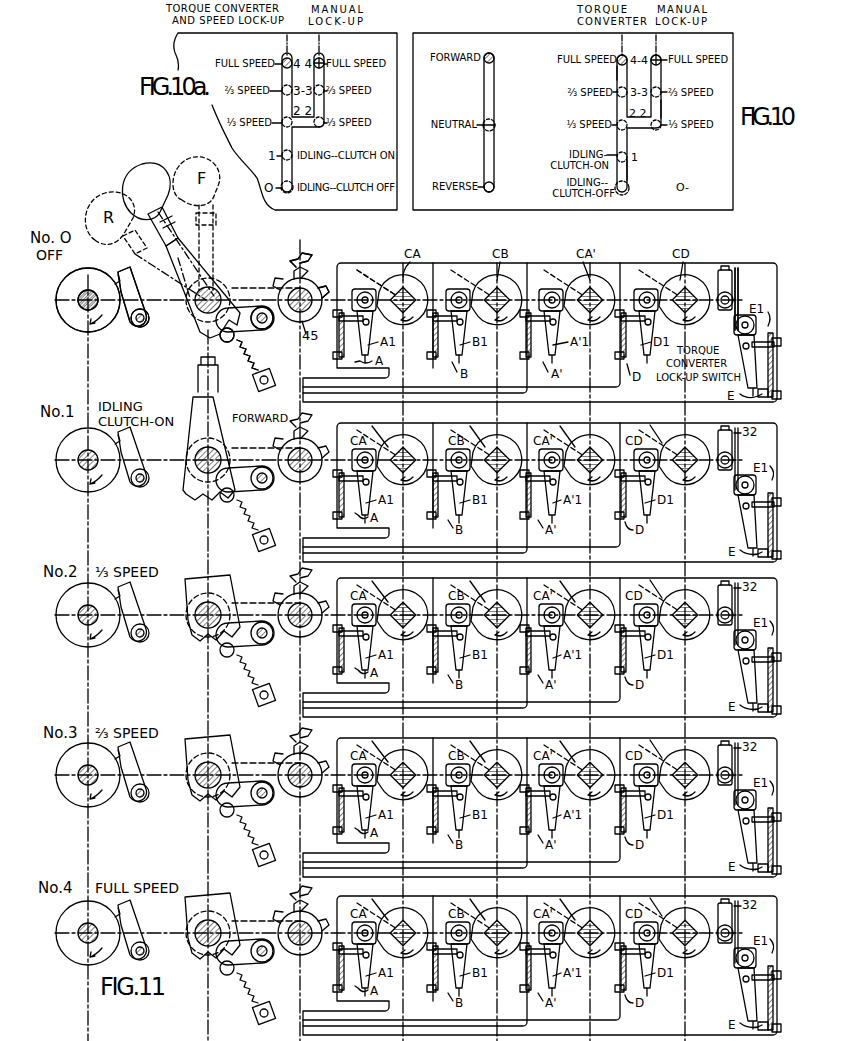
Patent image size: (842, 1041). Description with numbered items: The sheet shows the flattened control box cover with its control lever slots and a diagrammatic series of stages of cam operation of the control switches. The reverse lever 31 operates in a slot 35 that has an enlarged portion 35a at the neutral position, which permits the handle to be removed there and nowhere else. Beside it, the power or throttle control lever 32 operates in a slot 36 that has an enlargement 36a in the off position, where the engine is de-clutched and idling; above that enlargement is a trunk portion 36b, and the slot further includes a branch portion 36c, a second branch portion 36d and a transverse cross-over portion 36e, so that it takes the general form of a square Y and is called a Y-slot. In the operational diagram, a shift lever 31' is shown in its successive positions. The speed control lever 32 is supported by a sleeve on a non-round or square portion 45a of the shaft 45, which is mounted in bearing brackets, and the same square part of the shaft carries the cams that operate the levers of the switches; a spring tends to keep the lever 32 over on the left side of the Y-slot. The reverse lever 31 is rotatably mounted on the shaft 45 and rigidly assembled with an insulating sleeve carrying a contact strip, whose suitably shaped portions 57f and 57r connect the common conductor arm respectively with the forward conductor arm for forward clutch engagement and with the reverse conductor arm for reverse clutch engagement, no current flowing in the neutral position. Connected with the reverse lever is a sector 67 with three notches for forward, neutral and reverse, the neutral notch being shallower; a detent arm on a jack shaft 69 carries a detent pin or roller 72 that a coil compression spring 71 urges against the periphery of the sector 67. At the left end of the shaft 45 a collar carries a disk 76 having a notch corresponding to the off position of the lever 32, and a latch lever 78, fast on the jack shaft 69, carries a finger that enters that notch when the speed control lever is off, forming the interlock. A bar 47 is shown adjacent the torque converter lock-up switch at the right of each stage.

In FIG. 10, the reverse lever 31 is at (503, 53).
In FIG. 10, the slot 35 is at (494, 93).
In FIG. 10, the enlarged portion 35a is at (495, 126).
In FIG. 10, the slot 36 is at (606, 109).
In FIG. 10, the enlargement 36a is at (634, 190).
In FIG. 10, the trunk portion 36b is at (628, 172).
In FIG. 10, the branch portion 36c is at (617, 73).
In FIG. 10, the second branch portion 36d is at (662, 110).
In FIG. 10, the transverse cross-over portion 36e is at (654, 131).
In FIG. 11, the disk 76 is at (58, 297).
In FIG. 11, the latch lever 78 is at (142, 285).
In FIG. 11, the shaft 45 is at (82, 306).
In FIG. 11, the shift lever 31' is at (178, 204).
In FIG. 11, the sector 67 is at (198, 338).
In FIG. 11, the jack shaft 69 is at (273, 318).
In FIG. 11, the coil compression spring 71 is at (260, 356).
In FIG. 11, the detent pin or roller 72 is at (227, 344).
In FIG. 11, the forward contact strip portion 57f is at (296, 266).
In FIG. 11, the reverse contact strip portion 57r is at (315, 265).
In FIG. 11, the square portion of the shaft 45a is at (418, 293).
In FIG. 11, the power or throttle control lever 32 is at (733, 270).
In FIG. 11, the switch bar 47 is at (734, 323).